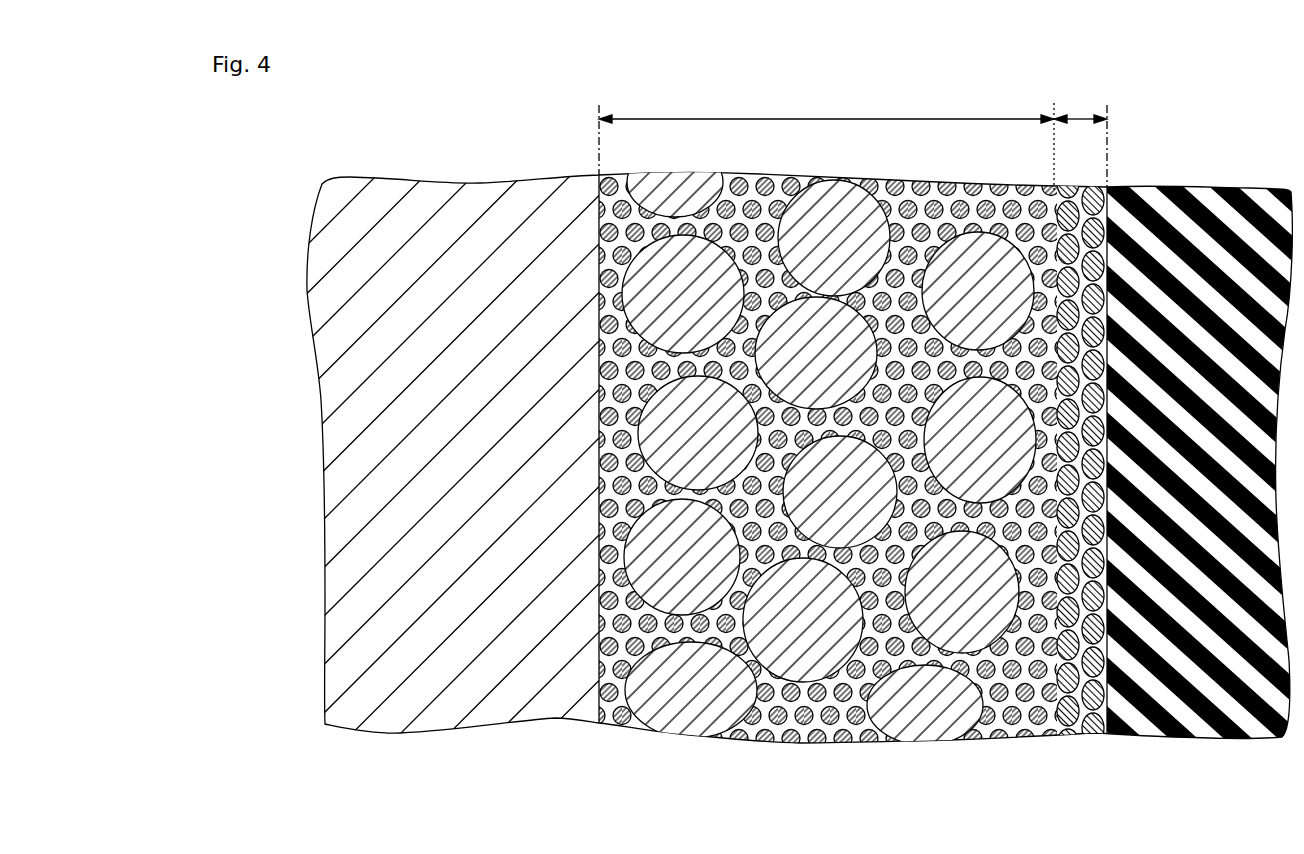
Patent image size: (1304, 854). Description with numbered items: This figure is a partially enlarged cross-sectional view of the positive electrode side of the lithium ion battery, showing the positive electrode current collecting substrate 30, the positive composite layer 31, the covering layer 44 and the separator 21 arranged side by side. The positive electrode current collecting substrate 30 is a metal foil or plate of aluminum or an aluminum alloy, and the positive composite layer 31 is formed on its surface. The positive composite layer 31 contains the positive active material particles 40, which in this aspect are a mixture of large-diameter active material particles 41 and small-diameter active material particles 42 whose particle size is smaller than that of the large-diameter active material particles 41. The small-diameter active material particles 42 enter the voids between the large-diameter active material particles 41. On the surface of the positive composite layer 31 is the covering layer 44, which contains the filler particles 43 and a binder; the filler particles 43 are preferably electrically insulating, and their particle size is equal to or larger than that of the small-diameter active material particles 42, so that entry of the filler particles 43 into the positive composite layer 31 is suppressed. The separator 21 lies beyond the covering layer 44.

The separator 21 is at (1193, 723).
The positive electrode current collecting substrate 30 is at (447, 717).
The positive composite layer 31 is at (845, 117).
The positive active material particles 40 is at (828, 484).
The large-diameter active material particles 41 is at (687, 710).
The small-diameter active material particles 42 is at (605, 725).
The filler particles 43 is at (1068, 732).
The covering layer 44 is at (1082, 115).